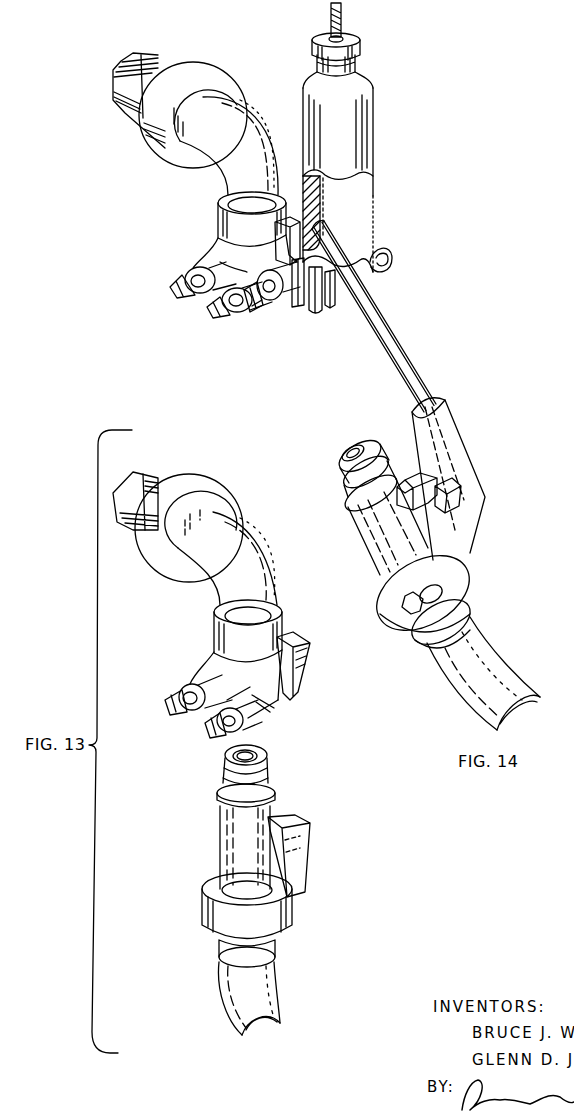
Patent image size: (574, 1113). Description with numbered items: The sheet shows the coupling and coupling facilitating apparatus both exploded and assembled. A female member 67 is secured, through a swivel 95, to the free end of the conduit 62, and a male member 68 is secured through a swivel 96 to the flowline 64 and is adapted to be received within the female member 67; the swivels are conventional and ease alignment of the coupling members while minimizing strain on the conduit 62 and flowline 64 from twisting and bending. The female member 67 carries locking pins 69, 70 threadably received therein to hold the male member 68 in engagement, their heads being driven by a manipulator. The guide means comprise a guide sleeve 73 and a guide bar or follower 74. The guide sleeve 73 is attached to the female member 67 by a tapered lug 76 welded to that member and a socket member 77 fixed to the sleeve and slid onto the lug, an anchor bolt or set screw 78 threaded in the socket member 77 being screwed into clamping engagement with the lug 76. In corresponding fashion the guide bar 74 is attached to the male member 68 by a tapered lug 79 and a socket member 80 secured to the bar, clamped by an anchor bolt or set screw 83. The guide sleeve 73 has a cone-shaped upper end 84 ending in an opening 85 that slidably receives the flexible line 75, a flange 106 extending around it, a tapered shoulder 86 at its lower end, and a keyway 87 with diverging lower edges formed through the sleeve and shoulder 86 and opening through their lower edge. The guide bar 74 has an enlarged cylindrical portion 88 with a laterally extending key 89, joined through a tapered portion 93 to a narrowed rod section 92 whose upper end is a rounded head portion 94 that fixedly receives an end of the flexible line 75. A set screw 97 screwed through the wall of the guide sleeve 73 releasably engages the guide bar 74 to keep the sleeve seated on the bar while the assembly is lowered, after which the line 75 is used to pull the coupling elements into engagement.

In FIG. 14, the conduit 62 is at (146, 56).
In FIG. 13, the conduit 62 is at (146, 478).
In FIG. 14, the swivel 95 is at (196, 68).
In FIG. 13, the swivel 95 is at (200, 491).
In FIG. 14, the female member 67 is at (218, 242).
In FIG. 13, the female member 67 is at (277, 702).
In FIG. 14, the locking pin 69 is at (181, 288).
In FIG. 13, the locking pin 69 is at (172, 706).
In FIG. 14, the locking pin 70 is at (216, 308).
In FIG. 13, the locking pin 70 is at (208, 729).
In FIG. 14, the anchor bolt or set screw 78 is at (261, 305).
In FIG. 14, the tapered lug 76 is at (298, 212).
In FIG. 13, the tapered lug 76 is at (304, 672).
In FIG. 14, the socket member 77 is at (297, 303).
In FIG. 14, the keyway 87 is at (311, 314).
In FIG. 14, the tapered shoulder 86 is at (332, 308).
In FIG. 14, the guide sleeve 73 is at (348, 137).
In FIG. 14, the flexible line 75 is at (344, 9).
In FIG. 14, the opening 85 is at (357, 41).
In FIG. 14, the flange 106 is at (322, 36).
In FIG. 14, the upper end 84 is at (365, 70).
In FIG. 14, the rounded head portion 94 is at (322, 220).
In FIG. 14, the set screw 97 is at (380, 260).
In FIG. 14, the rod section 92 is at (391, 324).
In FIG. 14, the tapered portion 93 is at (431, 407).
In FIG. 14, the enlarged cylindrical portion 88 is at (457, 442).
In FIG. 14, the guide bar or follower 74 is at (458, 473).
In FIG. 14, the key 89 is at (452, 493).
In FIG. 14, the tapered lug 79 is at (418, 483).
In FIG. 13, the tapered lug 79 is at (306, 847).
In FIG. 14, the male member 68 is at (377, 553).
In FIG. 13, the male member 68 is at (275, 808).
In FIG. 14, the socket member 80 is at (462, 568).
In FIG. 14, the anchor bolt or set screw 83 is at (418, 617).
In FIG. 14, the flowline 64 is at (491, 661).
In FIG. 13, the flowline 64 is at (273, 993).
In FIG. 13, the swivel 96 is at (290, 925).